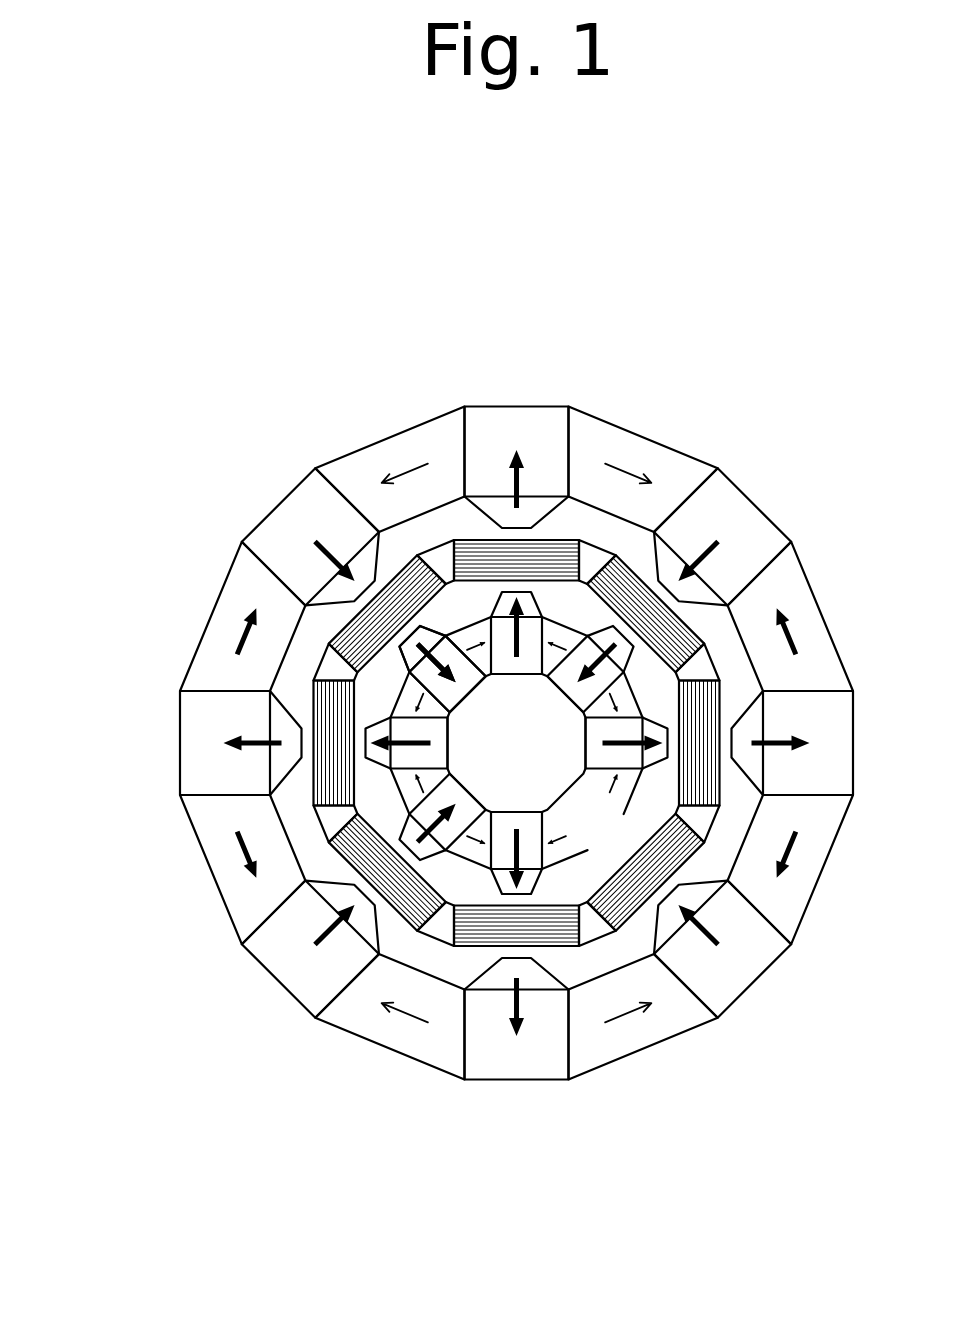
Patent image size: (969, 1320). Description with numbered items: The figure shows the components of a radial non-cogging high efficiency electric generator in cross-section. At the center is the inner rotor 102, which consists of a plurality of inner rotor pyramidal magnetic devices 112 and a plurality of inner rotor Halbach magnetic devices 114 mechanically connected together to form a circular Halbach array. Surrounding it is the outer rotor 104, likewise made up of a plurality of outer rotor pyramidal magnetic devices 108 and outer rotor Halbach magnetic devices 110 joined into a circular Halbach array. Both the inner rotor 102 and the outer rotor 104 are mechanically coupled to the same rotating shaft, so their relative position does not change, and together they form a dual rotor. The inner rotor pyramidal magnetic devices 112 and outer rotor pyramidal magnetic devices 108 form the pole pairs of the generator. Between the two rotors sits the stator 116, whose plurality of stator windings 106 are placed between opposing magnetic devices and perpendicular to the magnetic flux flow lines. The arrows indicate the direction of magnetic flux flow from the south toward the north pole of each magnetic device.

The inner rotor 102 is at (577, 732).
The outer rotor 104 is at (513, 1090).
The stator windings 106 is at (313, 712).
The outer rotor pyramidal magnetic devices 108 is at (272, 990).
The outer rotor Halbach magnetic devices 110 is at (203, 882).
The inner rotor pyramidal magnetic devices 112 is at (393, 655).
The inner rotor Halbach magnetic devices 114 is at (465, 620).
The stator 116 is at (599, 943).